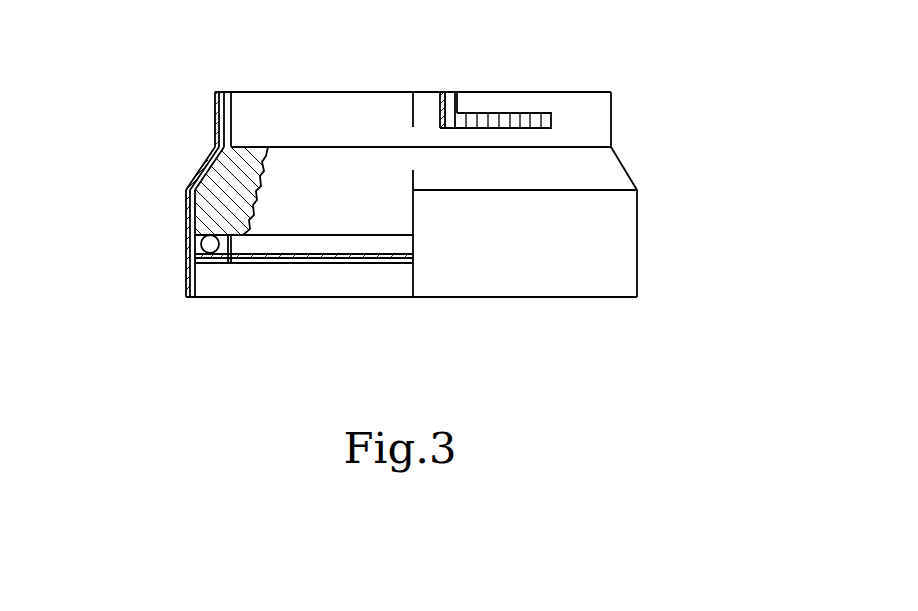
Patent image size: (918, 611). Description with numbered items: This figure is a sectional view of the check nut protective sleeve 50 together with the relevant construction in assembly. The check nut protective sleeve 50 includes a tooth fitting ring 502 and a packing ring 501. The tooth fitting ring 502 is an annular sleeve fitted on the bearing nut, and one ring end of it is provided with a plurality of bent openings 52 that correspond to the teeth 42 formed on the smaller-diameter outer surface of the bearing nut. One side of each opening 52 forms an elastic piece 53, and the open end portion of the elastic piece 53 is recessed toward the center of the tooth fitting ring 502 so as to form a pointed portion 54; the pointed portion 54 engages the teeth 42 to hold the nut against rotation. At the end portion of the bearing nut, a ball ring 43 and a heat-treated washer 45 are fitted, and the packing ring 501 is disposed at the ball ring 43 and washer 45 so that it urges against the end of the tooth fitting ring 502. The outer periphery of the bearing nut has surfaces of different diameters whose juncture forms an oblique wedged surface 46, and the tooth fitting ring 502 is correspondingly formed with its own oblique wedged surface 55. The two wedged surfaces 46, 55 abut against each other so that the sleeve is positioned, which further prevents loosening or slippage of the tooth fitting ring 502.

The check nut protective sleeve 50 is at (158, 101).
The teeth 42 is at (233, 100).
The ball ring 43 is at (200, 245).
The heat-treated washer 45 is at (188, 262).
The oblique wedged surface 46 is at (205, 185).
The bent openings 52 is at (523, 130).
The elastic piece 53 is at (215, 100).
The pointed portion 54 is at (472, 103).
The oblique wedged surface 55 is at (203, 163).
The packing ring 501 is at (219, 265).
The tooth fitting ring 502 is at (187, 207).